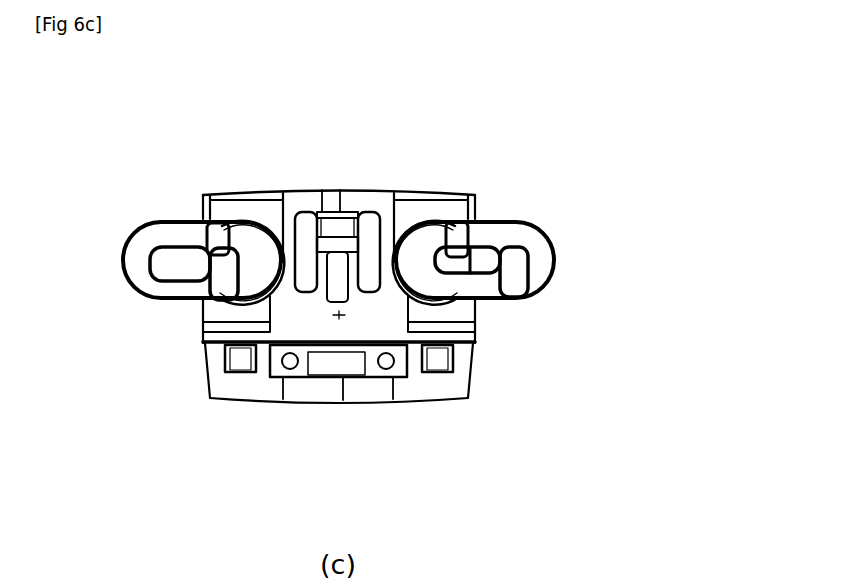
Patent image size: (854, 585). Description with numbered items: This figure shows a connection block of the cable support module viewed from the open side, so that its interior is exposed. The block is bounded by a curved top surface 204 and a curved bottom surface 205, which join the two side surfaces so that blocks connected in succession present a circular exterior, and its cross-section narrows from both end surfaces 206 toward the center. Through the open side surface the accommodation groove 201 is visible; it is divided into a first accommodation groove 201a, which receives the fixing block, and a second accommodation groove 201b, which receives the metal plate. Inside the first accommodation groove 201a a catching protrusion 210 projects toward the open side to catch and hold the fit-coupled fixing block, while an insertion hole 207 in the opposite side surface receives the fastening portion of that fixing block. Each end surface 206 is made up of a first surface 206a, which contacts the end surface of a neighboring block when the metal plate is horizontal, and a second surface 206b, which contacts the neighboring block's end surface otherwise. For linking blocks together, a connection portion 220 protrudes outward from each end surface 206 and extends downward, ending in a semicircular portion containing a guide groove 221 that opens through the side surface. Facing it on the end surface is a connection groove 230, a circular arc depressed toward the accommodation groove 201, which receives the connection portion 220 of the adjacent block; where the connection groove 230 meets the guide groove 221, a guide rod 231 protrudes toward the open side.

The accommodation groove 201 is at (377, 478).
The first accommodation groove 201a is at (346, 318).
The second accommodation groove 201b is at (244, 340).
The top surface 204 is at (407, 205).
The bottom surface 205 is at (420, 400).
The end surfaces 206 is at (691, 197).
The first surface 206a is at (478, 220).
The second surface 206b is at (476, 364).
The insertion hole 207 is at (368, 243).
The catching protrusion 210 is at (320, 233).
The connection portion 220 is at (143, 250).
The guide groove 221 is at (175, 264).
The connection groove 230 is at (254, 283).
The guide rod 231 is at (220, 250).